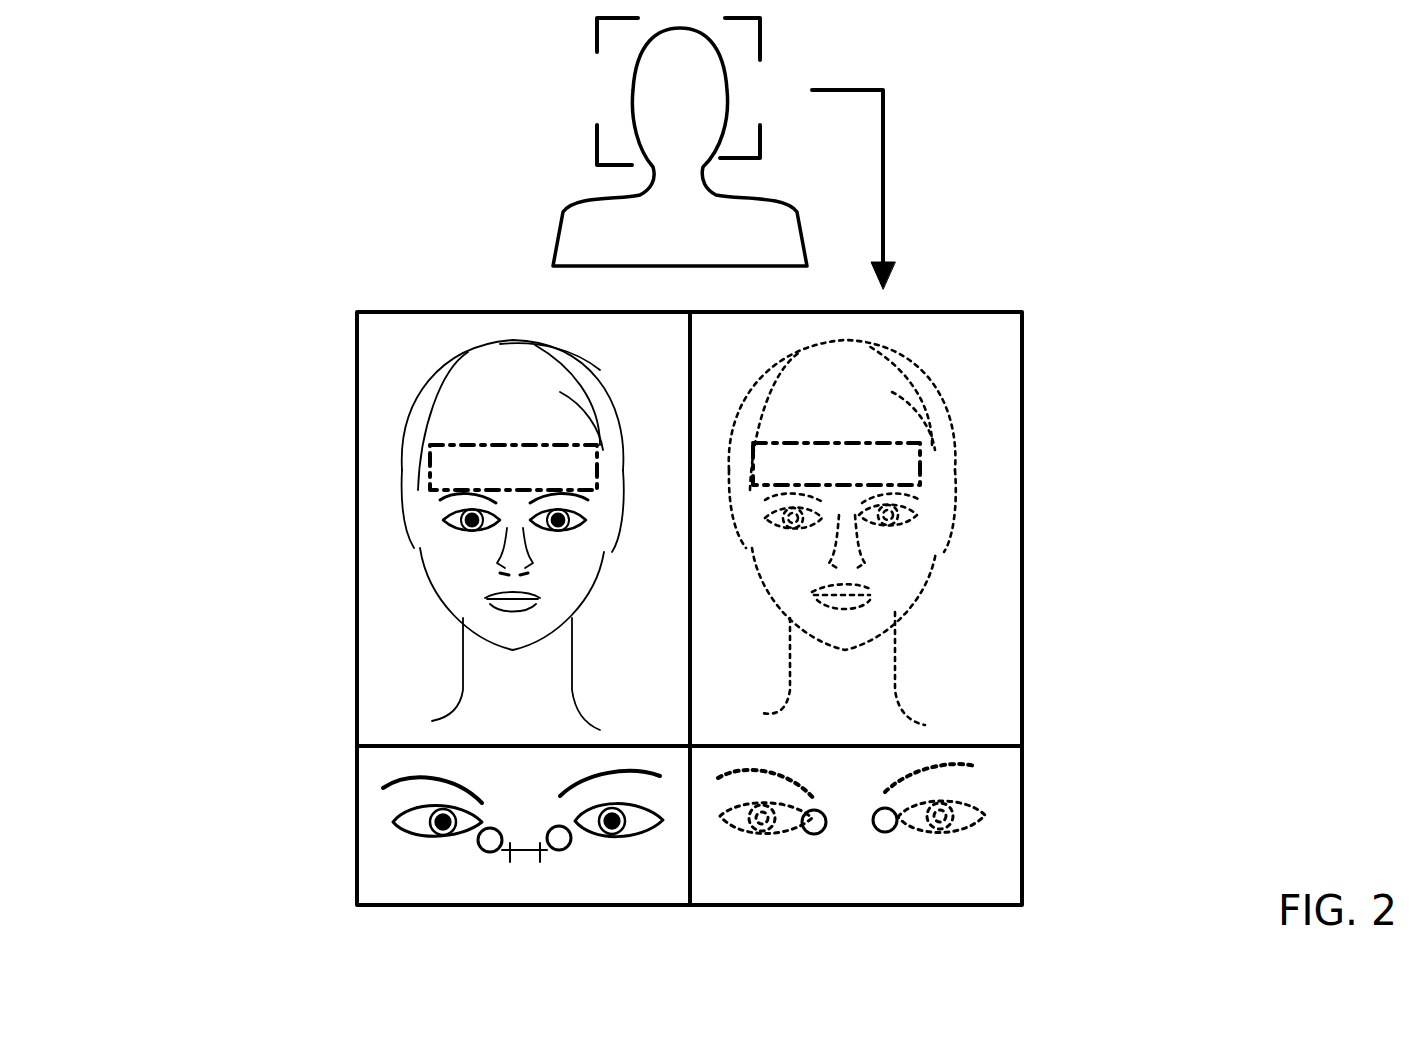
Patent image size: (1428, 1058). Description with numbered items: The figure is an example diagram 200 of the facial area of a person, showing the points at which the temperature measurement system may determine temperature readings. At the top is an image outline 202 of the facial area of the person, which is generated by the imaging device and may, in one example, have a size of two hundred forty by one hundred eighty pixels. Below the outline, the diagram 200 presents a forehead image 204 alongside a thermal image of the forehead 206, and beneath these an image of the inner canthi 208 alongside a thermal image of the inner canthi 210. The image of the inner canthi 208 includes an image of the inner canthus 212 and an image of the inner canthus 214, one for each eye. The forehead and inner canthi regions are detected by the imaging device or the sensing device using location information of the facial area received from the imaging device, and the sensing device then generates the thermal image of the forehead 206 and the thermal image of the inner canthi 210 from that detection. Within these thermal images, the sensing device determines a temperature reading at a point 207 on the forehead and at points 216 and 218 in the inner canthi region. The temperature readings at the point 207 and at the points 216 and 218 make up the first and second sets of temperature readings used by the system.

The diagram 200 is at (64, 90).
The image outline 202 is at (596, 136).
The forehead image 204 is at (357, 462).
The thermal image of the forehead 206 is at (1022, 432).
The point on the forehead 207 is at (887, 433).
The image of the inner canthi 208 is at (426, 826).
The thermal image of the inner canthi 210 is at (922, 836).
The image of the inner canthus 212 is at (478, 836).
The image of the inner canthus 214 is at (497, 851).
The point in the inner canthi region 216 is at (897, 822).
The point in the inner canthi region 218 is at (822, 833).